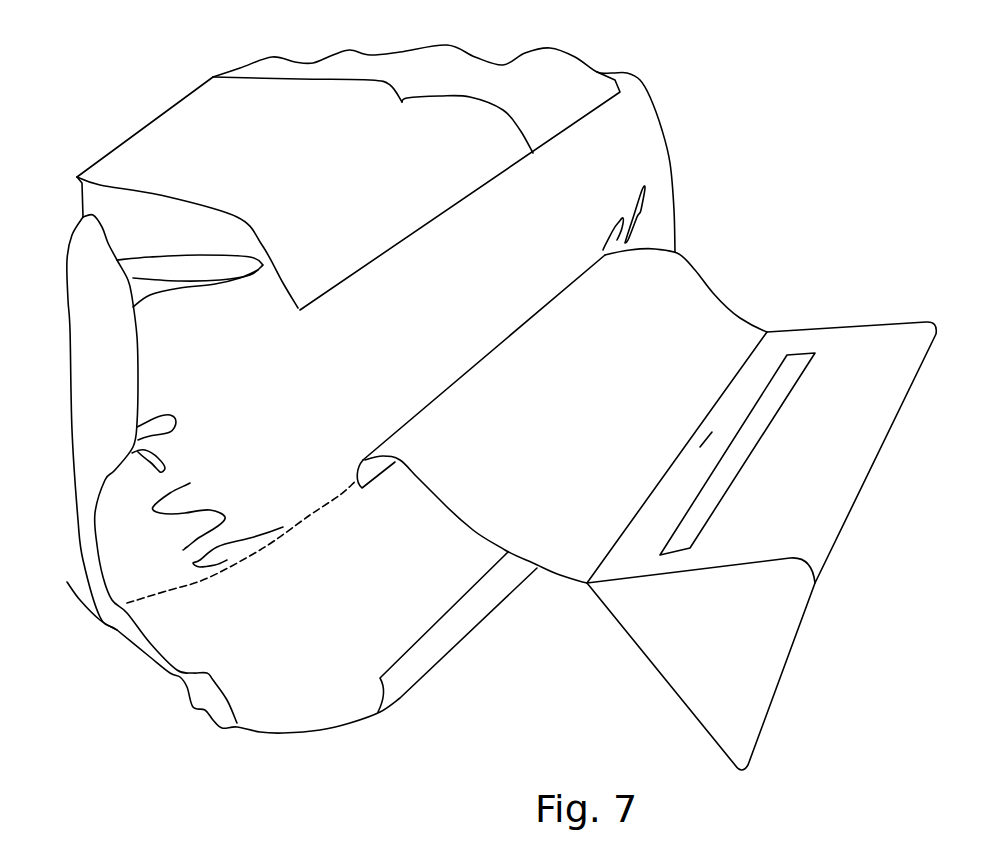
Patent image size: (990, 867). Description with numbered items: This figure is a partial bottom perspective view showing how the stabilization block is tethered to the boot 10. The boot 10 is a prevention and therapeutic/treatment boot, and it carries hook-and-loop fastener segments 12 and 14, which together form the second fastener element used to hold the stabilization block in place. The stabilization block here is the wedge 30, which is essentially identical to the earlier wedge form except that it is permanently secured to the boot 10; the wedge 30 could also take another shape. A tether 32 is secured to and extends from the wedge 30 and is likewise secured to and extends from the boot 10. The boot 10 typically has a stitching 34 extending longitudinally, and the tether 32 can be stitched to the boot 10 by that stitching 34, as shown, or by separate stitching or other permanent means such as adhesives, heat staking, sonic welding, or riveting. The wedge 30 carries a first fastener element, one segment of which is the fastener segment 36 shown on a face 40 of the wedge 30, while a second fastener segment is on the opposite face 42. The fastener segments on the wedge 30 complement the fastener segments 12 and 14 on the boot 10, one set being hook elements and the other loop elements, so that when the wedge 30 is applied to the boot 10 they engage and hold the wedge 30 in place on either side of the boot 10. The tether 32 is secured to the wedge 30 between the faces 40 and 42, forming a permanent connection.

The boot 10 is at (760, 168).
The hook-and-loop fastener segment 12 is at (161, 146).
The hook-and-loop fastener segment 14 is at (590, 93).
The wedge 30 is at (860, 320).
The tether 32 is at (687, 310).
The stitching 34 is at (327, 503).
The fastener segment 36 is at (792, 365).
The face 40 is at (842, 430).
The face 42 is at (684, 694).